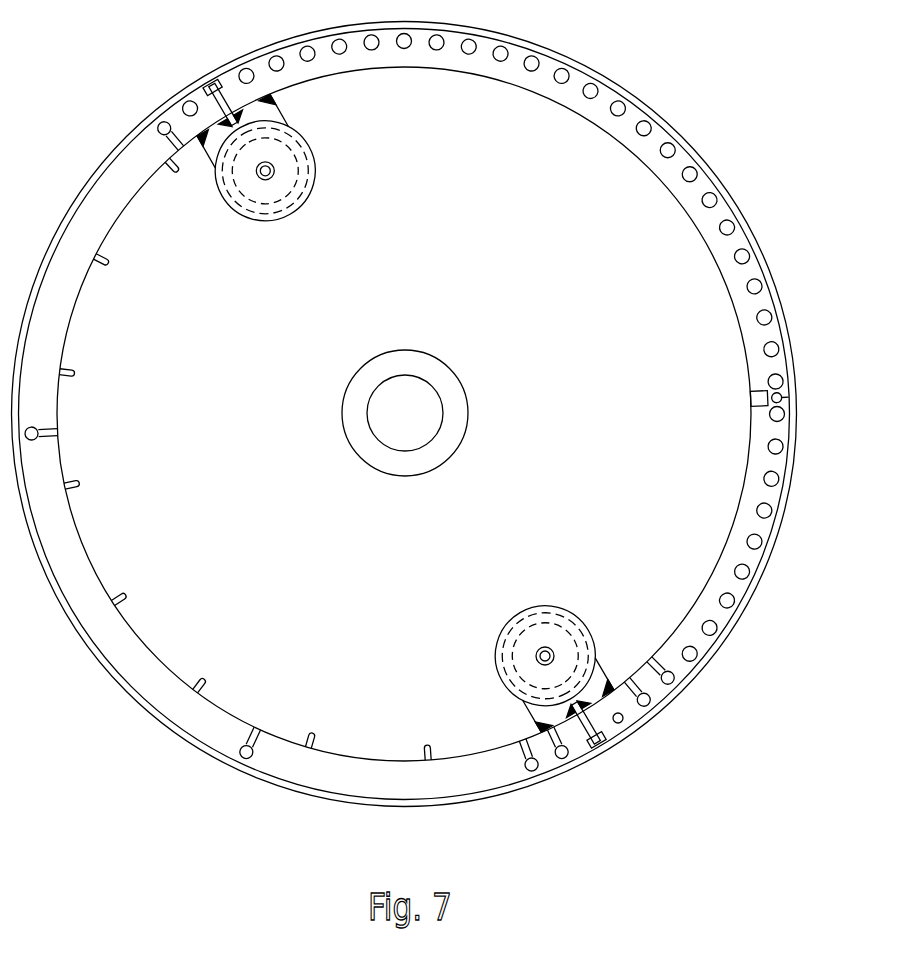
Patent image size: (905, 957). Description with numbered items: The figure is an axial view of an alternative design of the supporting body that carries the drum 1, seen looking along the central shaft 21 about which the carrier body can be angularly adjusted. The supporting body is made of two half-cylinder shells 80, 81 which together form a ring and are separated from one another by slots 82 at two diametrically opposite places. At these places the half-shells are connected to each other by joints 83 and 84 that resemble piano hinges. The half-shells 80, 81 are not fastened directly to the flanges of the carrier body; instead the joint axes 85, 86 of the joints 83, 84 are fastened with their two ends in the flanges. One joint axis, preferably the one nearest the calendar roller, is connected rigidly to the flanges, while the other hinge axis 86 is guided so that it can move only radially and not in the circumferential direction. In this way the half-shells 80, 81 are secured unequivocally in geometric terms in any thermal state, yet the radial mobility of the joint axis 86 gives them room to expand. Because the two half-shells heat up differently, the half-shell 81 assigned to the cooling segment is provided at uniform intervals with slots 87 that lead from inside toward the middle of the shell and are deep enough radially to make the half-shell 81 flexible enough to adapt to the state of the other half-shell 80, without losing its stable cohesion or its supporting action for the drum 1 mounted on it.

The drum 1 is at (118, 688).
The shaft 21 is at (421, 392).
The half-cylinder shell 80 is at (763, 364).
The half-cylinder shell 81 is at (48, 470).
The slots 82 is at (220, 98).
The joint 83 is at (256, 192).
The joint 84 is at (518, 652).
The joint axis 85 is at (268, 171).
The joint axis 86 is at (549, 652).
The slots 87 is at (196, 693).